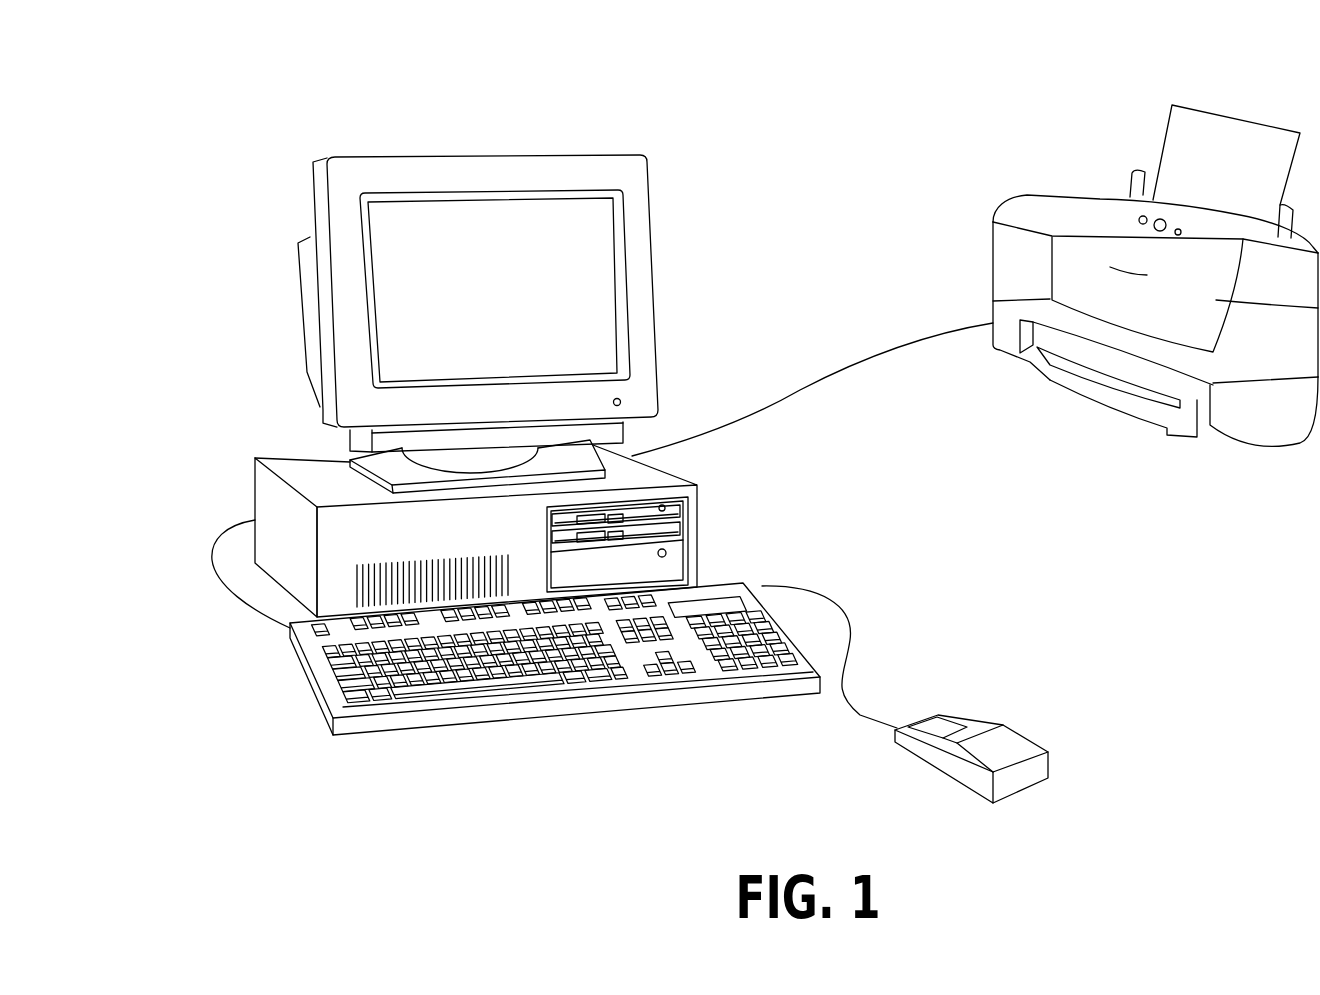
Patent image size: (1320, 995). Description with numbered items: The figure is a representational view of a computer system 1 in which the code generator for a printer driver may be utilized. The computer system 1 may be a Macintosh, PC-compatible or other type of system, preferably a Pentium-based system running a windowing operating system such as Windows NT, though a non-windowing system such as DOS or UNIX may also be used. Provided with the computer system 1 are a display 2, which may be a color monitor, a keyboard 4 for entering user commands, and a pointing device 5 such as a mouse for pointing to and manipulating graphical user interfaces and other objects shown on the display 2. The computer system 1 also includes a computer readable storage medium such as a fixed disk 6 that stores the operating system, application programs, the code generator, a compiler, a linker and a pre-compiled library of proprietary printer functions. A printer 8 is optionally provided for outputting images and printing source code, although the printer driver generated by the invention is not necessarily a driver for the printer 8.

The computer system 1 is at (733, 177).
The display 2 is at (523, 157).
The keyboard 4 is at (413, 702).
The pointing device 5 is at (1027, 790).
The fixed disk 6 is at (673, 553).
The printer 8 is at (1035, 162).